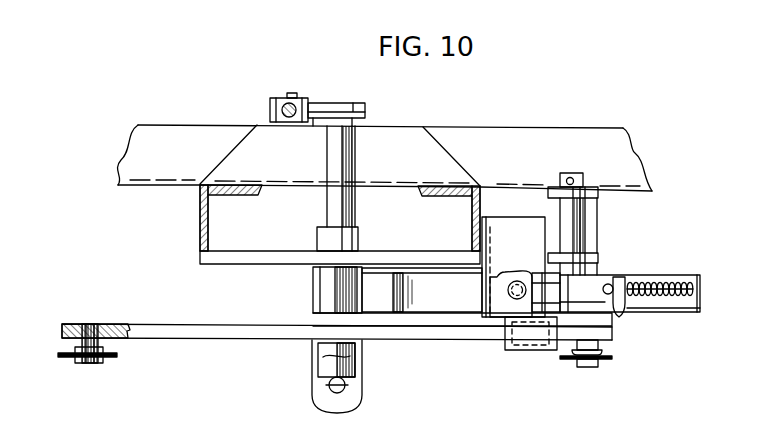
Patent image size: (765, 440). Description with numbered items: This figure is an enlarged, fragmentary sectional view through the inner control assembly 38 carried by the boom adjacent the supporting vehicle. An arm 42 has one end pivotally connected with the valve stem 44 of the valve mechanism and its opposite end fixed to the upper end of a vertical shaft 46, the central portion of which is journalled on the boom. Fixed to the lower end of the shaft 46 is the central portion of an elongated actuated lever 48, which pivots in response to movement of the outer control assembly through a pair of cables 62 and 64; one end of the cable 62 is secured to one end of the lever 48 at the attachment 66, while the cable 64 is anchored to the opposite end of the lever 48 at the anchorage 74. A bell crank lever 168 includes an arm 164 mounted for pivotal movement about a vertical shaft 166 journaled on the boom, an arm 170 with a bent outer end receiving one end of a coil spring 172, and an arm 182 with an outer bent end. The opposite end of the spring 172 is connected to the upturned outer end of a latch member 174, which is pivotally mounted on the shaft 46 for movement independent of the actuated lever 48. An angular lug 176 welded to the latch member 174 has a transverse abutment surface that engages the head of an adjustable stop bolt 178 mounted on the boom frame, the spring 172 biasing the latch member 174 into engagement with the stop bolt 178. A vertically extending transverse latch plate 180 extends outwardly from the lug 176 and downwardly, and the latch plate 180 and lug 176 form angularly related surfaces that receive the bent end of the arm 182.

The inner control assembly 38 is at (247, 273).
The arm 42 is at (318, 108).
The valve stem 44 is at (285, 104).
The vertical shaft 46 is at (356, 142).
The actuated lever 48 is at (223, 332).
The cable 62 is at (98, 360).
The cable 64 is at (600, 361).
The cable end attachment 66 is at (77, 364).
The cable end anchorage 74 is at (599, 346).
The arm 164 is at (418, 288).
The vertical shaft 166 is at (584, 182).
The bell crank lever 168 is at (604, 268).
The arm 170 is at (668, 302).
The coil spring 172 is at (653, 286).
The latch member 174 is at (378, 320).
The angular lug 176 is at (488, 278).
The adjustable stop bolt 178 is at (518, 275).
The latch plate 180 is at (527, 349).
The arm 182 is at (555, 298).